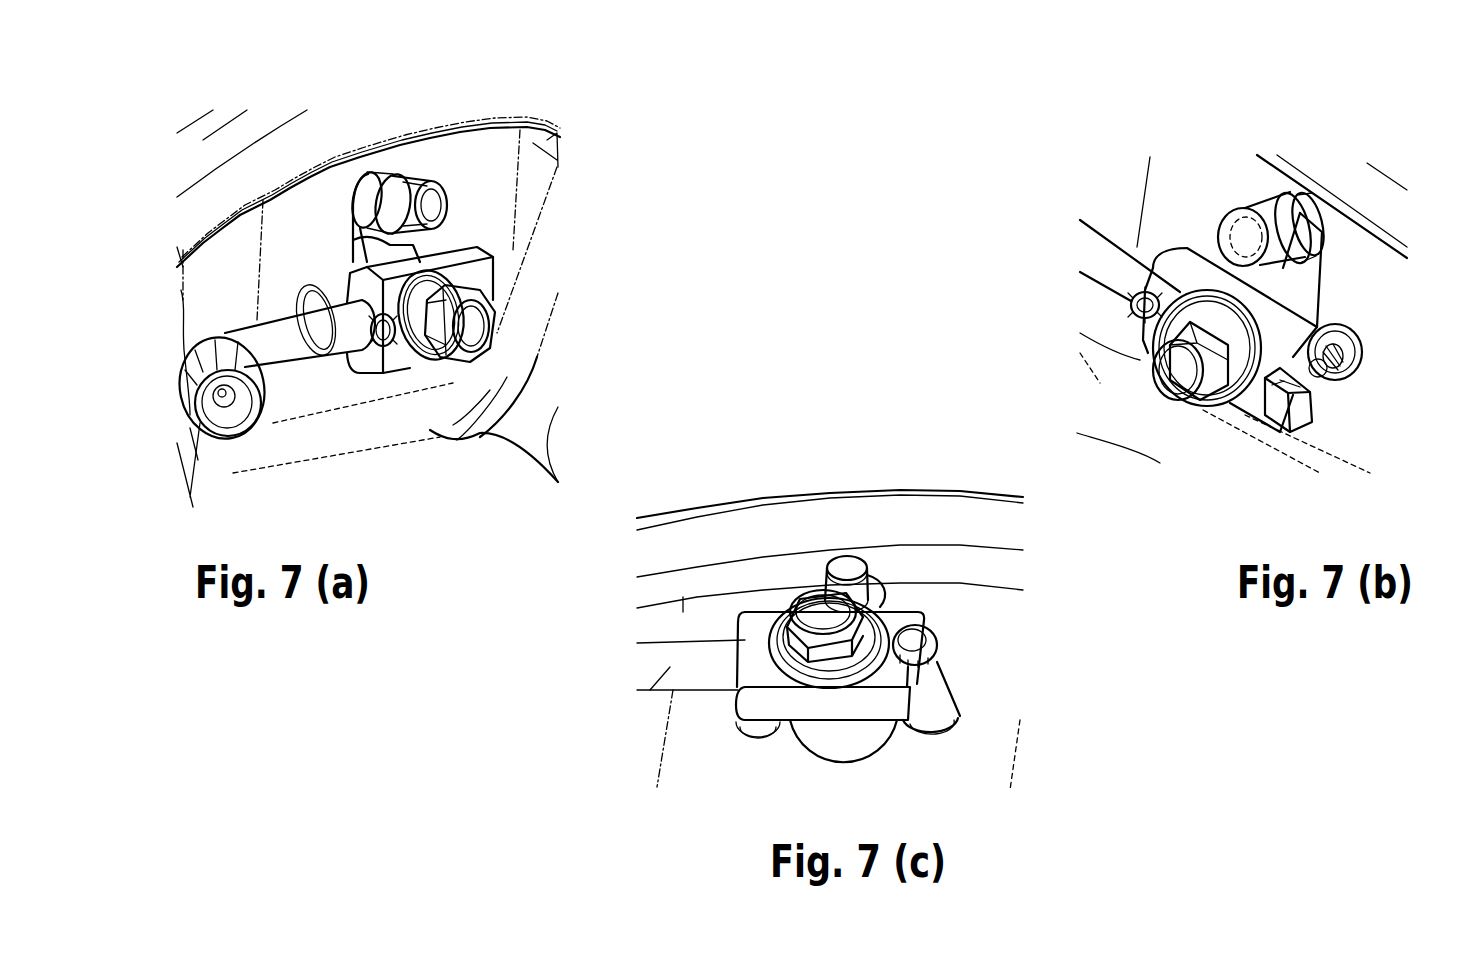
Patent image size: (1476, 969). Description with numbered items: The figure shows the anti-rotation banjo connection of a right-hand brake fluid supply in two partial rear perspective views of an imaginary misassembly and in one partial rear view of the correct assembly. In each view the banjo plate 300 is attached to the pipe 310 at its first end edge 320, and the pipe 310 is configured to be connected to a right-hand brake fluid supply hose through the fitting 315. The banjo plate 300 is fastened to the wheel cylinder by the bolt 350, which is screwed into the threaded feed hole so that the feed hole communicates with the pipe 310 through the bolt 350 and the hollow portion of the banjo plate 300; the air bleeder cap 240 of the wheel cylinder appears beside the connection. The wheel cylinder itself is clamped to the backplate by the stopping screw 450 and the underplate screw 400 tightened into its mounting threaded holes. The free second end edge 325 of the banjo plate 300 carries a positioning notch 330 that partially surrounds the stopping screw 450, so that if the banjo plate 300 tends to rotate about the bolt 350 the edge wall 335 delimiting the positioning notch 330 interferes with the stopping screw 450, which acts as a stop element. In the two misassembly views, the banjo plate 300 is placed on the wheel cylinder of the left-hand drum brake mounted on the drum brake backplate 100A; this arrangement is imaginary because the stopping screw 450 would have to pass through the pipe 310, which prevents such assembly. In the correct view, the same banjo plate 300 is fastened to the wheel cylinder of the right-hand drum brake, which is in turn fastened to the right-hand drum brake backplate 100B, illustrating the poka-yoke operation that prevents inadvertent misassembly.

In FIG. 7a, the drum brake backplate 100A is at (313, 203).
In FIG. 7b, the drum brake backplate 100A is at (1357, 245).
In FIG. 7c, the right-hand drum brake backplate 100B is at (866, 523).
In FIG. 7a, the air bleeder cap 240 is at (431, 206).
In FIG. 7b, the air bleeder cap 240 is at (1238, 245).
In FIG. 7c, the air bleeder cap 240 is at (845, 565).
In FIG. 7a, the banjo plate 300 is at (480, 270).
In FIG. 7b, the banjo plate 300 is at (1171, 291).
In FIG. 7c, the banjo plate 300 is at (760, 665).
In FIG. 7a, the pipe 310 is at (285, 337).
In FIG. 7a, the fitting 315 is at (190, 364).
In FIG. 7b, the fitting 315 is at (1107, 252).
In FIG. 7c, the fitting 315 is at (670, 667).
In FIG. 7a, the first end edge 320 is at (367, 287).
In FIG. 7b, the second end edge 325 is at (1298, 414).
In FIG. 7b, the positioning notch 330 is at (1291, 382).
In FIG. 7b, the edge wall 335 is at (1280, 382).
In FIG. 7a, the bolt 350 is at (477, 333).
In FIG. 7b, the bolt 350 is at (1177, 372).
In FIG. 7c, the bolt 350 is at (815, 607).
In FIG. 7b, the underplate screw 400 is at (1322, 360).
In FIG. 7a, the stopping screw 450 is at (392, 345).
In FIG. 7b, the stopping screw 450 is at (1131, 306).
In FIG. 7c, the stopping screw 450 is at (912, 642).